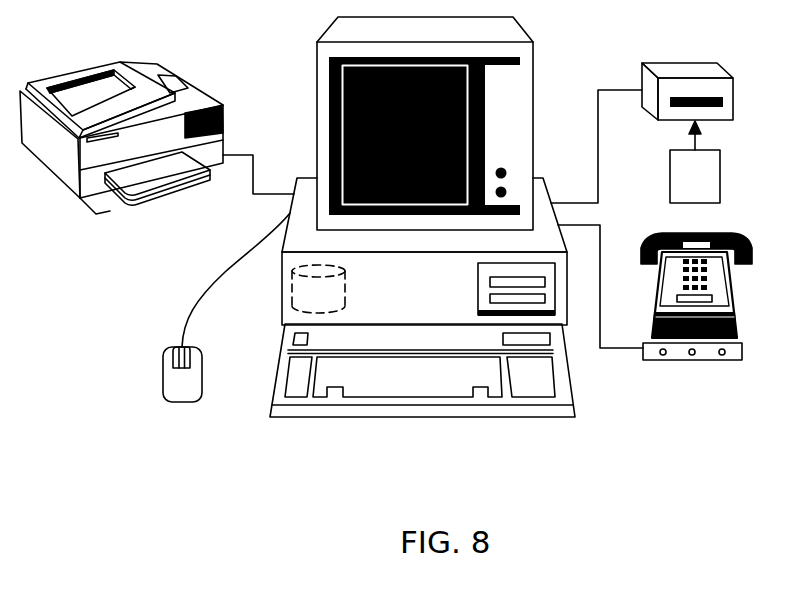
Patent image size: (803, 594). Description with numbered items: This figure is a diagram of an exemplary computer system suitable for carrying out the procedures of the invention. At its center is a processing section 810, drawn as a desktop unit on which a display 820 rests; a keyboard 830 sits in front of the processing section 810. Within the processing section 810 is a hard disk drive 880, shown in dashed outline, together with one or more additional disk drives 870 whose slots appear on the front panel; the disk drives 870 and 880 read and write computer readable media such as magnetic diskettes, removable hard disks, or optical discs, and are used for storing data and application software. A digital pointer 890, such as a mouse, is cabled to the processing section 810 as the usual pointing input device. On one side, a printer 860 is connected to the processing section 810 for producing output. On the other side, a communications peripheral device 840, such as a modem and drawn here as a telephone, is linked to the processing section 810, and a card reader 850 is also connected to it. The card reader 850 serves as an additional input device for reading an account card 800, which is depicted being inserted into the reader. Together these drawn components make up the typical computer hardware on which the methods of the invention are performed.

The account card 800 is at (716, 188).
The processing section 810 is at (313, 178).
The display 820 is at (318, 51).
The keyboard 830 is at (495, 400).
The communications peripheral device 840 is at (705, 362).
The card reader 850 is at (643, 73).
The printer 860 is at (72, 194).
The additional disk drives 870 is at (530, 277).
The hard disk drive 880 is at (290, 295).
The digital pointer 890 is at (162, 373).